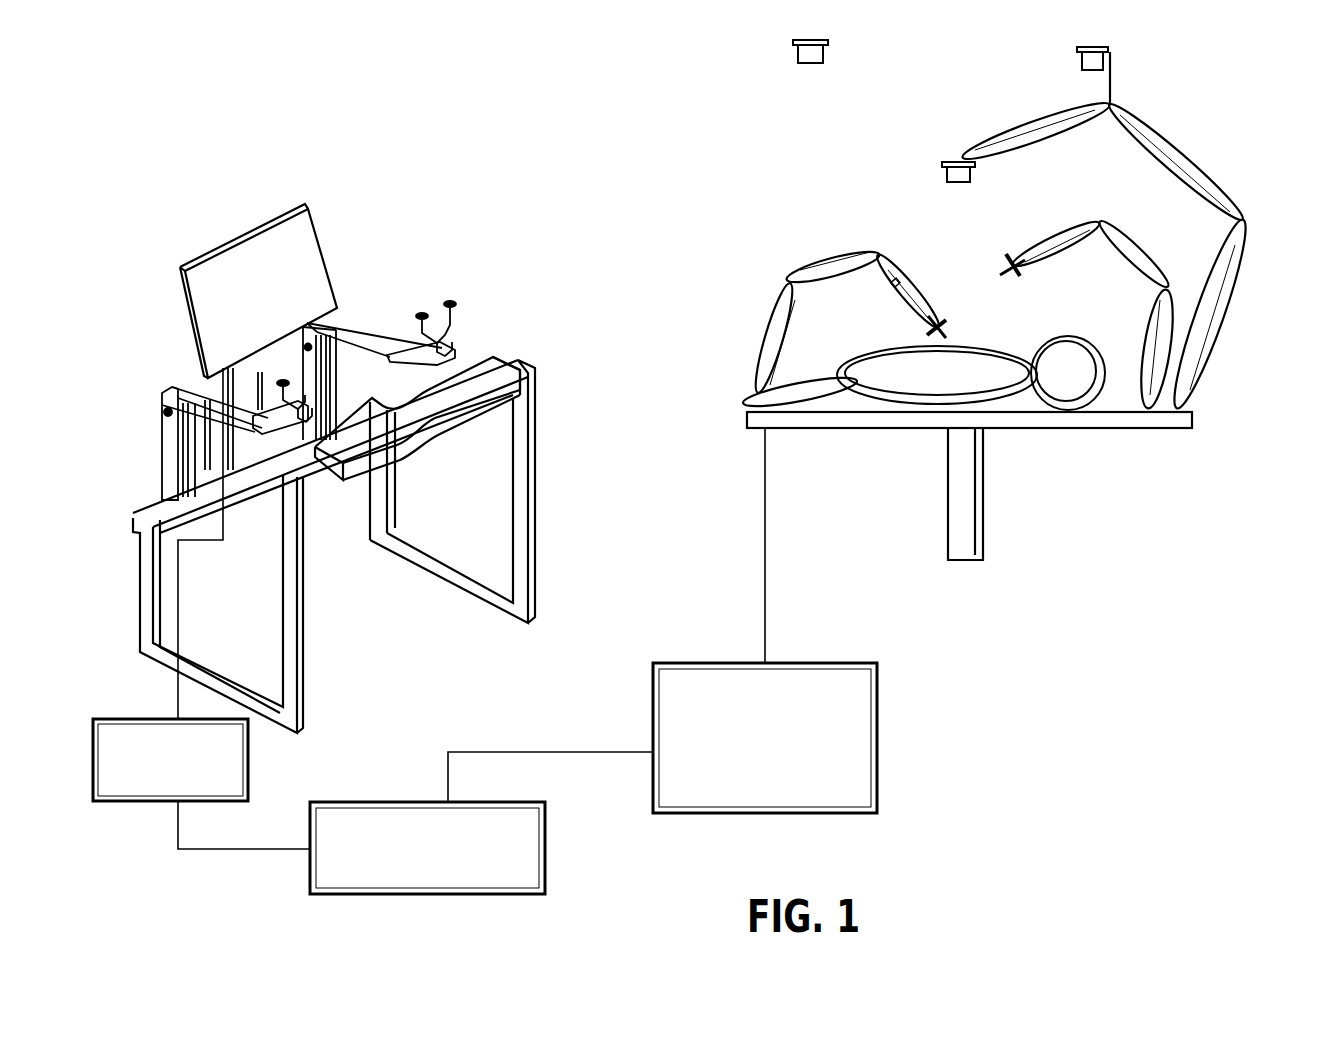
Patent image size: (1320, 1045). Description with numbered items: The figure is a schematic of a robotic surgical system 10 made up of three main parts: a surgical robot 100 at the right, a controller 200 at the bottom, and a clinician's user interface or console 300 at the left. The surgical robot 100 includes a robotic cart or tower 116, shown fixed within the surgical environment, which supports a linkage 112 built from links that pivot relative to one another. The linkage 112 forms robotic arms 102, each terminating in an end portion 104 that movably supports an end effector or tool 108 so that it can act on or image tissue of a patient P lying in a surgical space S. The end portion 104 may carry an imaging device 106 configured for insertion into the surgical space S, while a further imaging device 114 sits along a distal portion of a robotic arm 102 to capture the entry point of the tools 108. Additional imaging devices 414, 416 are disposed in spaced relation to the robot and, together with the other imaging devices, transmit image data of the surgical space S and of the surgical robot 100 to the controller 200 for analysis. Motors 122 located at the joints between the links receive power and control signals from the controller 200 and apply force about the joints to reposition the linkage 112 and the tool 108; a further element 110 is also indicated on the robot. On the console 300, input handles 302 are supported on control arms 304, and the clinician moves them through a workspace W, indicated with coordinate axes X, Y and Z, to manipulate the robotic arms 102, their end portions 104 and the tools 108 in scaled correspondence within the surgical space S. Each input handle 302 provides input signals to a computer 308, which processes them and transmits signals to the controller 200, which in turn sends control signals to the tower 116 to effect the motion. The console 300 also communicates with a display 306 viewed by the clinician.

The robotic surgical system 10 is at (475, 176).
The surgical robot 100 is at (865, 163).
The robotic arm 102 is at (803, 245).
The end portion 104 is at (920, 328).
The imaging device 106 is at (938, 322).
The end effector or tool 108 is at (950, 330).
The arm link 110 is at (1025, 227).
The linkage 112 is at (1205, 170).
The imaging device 114 is at (945, 170).
The robotic cart or tower 116 is at (778, 744).
The motor 122 is at (877, 262).
The controller 200 is at (443, 861).
The user interface or console 300 is at (218, 212).
The input handle 302 is at (435, 320).
The control arm 304 is at (350, 338).
The display 306 is at (322, 228).
The computer 308 is at (170, 760).
The imaging device 414 is at (1104, 48).
The imaging device 416 is at (842, 44).
The surgical space S is at (982, 347).
The patient P is at (988, 378).
The workspace W is at (455, 287).
The X axis X is at (247, 361).
The Y axis Y is at (193, 360).
The Z axis Z is at (213, 368).